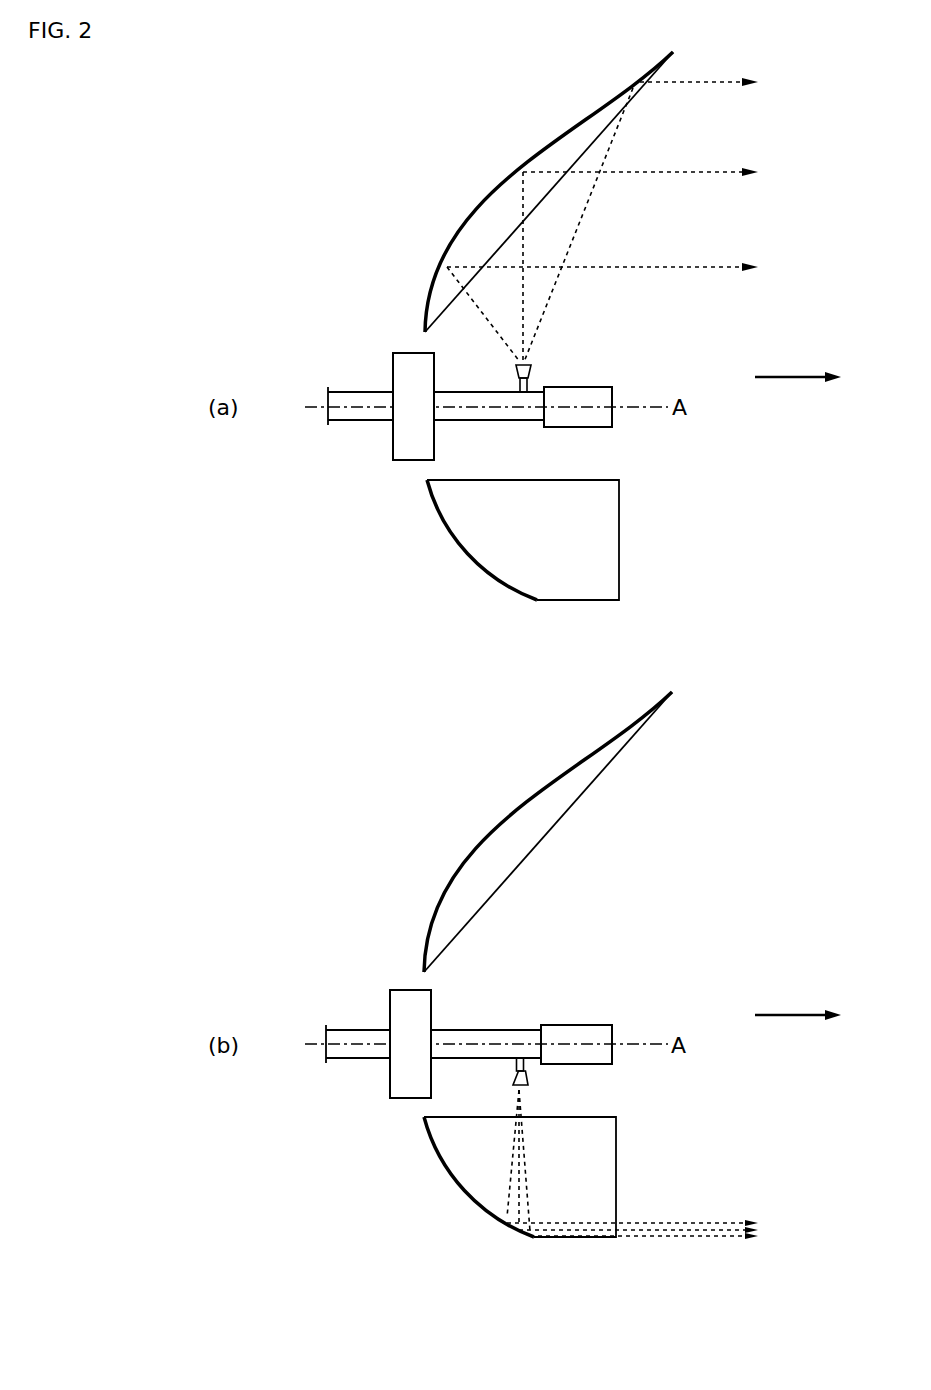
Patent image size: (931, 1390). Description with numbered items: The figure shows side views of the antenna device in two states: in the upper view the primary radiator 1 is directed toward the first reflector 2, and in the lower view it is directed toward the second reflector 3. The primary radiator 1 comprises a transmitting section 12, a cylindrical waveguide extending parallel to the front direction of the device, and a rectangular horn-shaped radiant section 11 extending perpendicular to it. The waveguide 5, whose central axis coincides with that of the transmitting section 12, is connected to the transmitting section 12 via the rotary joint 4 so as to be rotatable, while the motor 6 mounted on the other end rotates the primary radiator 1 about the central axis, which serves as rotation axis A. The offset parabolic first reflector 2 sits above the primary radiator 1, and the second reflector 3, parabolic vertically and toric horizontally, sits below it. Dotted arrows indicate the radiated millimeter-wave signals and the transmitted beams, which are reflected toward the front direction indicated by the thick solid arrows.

The primary radiator 1 is at (560, 347).
The first reflector 2 is at (478, 213).
The second reflector 3 is at (463, 552).
The rotary joint 4 is at (402, 457).
The waveguide 5 is at (367, 397).
The motor 6 is at (613, 397).
The radiant section 11 is at (531, 372).
The transmitting section 12 is at (476, 397).